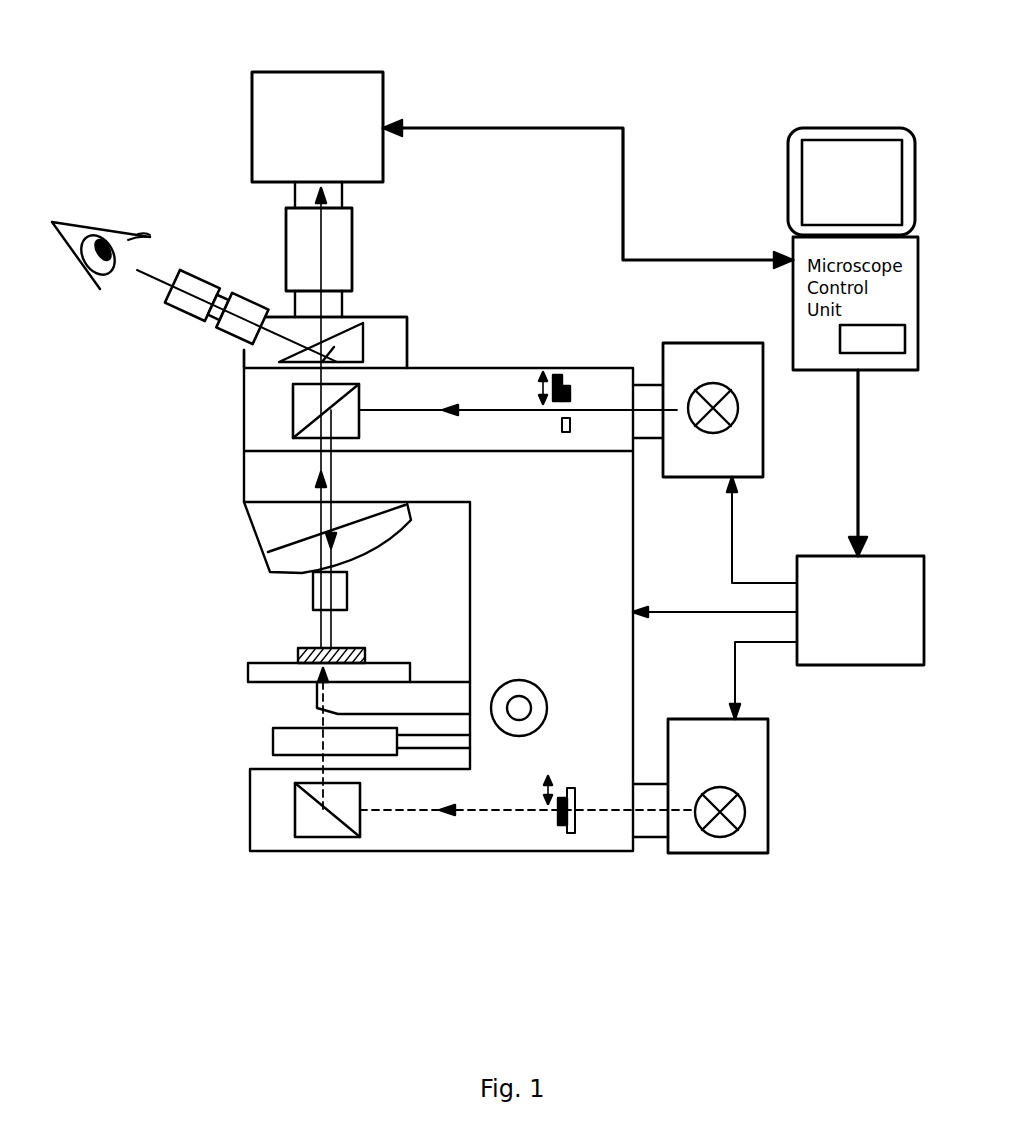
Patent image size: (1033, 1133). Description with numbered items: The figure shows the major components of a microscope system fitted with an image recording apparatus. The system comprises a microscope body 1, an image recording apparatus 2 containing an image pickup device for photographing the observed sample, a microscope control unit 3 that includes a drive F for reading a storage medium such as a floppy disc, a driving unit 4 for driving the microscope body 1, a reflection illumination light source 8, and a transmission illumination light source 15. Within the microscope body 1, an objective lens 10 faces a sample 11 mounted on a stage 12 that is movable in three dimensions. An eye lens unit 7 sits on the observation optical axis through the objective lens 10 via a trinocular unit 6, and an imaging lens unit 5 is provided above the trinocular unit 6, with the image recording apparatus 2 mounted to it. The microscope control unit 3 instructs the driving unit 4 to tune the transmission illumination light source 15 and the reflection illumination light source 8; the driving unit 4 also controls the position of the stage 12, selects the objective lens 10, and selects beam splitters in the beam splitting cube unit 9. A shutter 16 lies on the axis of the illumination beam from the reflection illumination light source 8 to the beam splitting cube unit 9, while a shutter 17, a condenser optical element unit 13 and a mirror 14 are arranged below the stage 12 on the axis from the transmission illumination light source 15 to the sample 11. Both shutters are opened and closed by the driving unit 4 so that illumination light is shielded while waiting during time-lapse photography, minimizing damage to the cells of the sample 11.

The microscope body 1 is at (605, 543).
The image recording apparatus 2 is at (288, 72).
The microscope control unit 3 is at (828, 128).
The driving unit 4 is at (822, 556).
The imaging lens unit 5 is at (353, 247).
The trinocular unit 6 is at (408, 343).
The eye lens unit 7 is at (217, 283).
The reflection illumination light source 8 is at (765, 400).
The beam splitting cube unit 9 is at (293, 410).
The objective lens 10 is at (313, 595).
The sample 11 is at (298, 655).
The stage 12 is at (248, 672).
The condenser optical element unit 13 is at (273, 742).
The mirror 14 is at (295, 815).
The transmission illumination light source 15 is at (770, 772).
The shutter for the reflection illumination light source 16 is at (576, 393).
The shutter for the transmission illumination light source 17 is at (583, 827).
The drive F is at (872, 346).